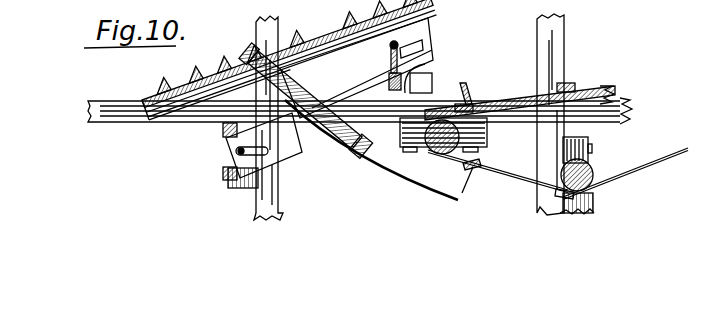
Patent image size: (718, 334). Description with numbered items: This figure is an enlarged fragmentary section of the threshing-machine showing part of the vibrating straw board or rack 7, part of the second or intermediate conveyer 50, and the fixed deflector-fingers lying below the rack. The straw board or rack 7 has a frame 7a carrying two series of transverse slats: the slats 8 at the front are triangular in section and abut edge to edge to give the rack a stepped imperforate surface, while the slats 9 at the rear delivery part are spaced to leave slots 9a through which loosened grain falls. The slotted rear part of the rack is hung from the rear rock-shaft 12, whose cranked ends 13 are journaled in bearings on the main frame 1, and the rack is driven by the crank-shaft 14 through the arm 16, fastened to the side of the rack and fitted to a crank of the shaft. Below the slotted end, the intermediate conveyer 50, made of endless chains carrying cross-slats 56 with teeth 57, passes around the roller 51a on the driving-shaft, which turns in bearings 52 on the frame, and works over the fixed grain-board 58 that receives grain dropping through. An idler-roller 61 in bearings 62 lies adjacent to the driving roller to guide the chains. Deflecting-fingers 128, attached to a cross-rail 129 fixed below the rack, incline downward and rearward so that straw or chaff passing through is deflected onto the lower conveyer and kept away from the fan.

The frame 1 is at (99, 107).
The vibrating straw board or rack 7 is at (165, 83).
The slats 8 is at (196, 78).
The frame 7a is at (220, 75).
The slats 9 is at (299, 44).
The spaces or slots 9a is at (338, 22).
The crank-shaft 14 is at (236, 152).
The arm 16 is at (343, 88).
The cranked ends 13 is at (421, 68).
The rear rock-shaft 12 is at (420, 88).
The second or intermediate conveyer 50 is at (520, 103).
The teeth 57 is at (553, 70).
The fixed grain-board 58 is at (600, 88).
The bearings 52 is at (487, 128).
The roller 51a is at (447, 155).
The cross-slats 56 is at (556, 193).
The bearings 62 is at (580, 141).
The idler-roller 61 is at (591, 172).
The cross-rail 129 is at (352, 147).
The deflecting-fingers 128 is at (388, 172).